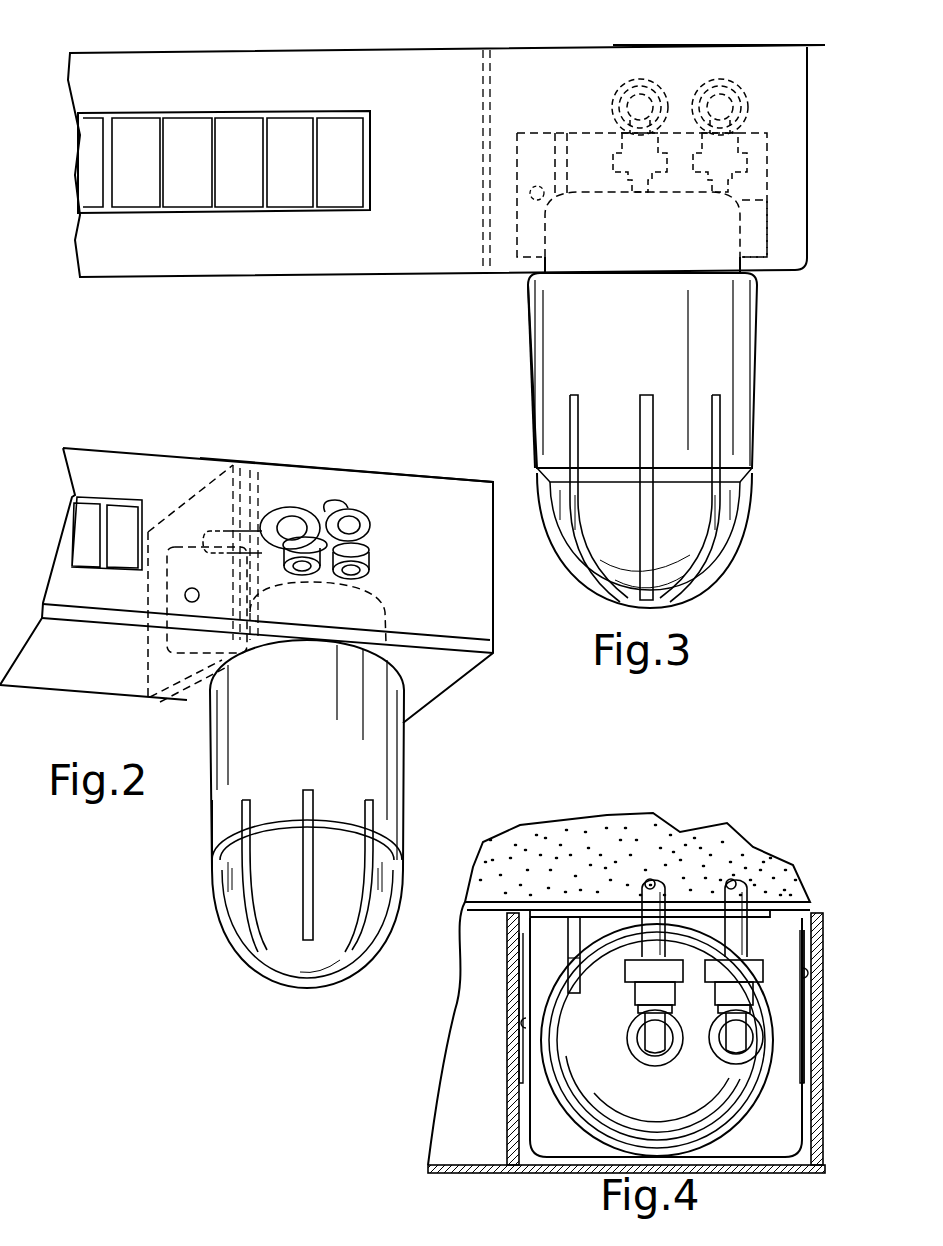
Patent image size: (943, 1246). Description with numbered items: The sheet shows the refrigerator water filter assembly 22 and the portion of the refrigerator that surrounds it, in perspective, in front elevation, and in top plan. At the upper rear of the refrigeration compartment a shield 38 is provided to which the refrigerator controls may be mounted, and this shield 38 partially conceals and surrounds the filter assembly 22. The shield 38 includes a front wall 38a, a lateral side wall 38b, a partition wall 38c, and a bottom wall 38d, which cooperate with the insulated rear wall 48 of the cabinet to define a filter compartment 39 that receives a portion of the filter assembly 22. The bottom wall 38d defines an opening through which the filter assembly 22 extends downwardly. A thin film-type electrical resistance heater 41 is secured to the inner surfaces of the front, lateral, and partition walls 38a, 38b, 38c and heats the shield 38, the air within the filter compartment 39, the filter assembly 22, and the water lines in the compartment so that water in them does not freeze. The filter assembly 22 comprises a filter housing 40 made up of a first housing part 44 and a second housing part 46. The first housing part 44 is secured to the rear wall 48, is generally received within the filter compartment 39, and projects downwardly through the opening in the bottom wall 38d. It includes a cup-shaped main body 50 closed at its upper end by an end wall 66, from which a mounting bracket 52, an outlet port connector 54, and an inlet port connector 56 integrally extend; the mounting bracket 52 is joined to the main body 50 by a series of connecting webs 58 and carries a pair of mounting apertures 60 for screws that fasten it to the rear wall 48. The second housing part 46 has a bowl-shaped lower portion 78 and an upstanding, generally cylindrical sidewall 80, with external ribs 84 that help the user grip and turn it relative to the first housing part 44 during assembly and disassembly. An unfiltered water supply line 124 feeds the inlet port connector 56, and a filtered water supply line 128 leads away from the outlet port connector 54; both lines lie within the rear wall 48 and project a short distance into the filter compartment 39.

In FIG. 3, the filter assembly 22 is at (750, 582).
In FIG. 2, the filter assembly 22 is at (216, 967).
In FIG. 4, the filter assembly 22 is at (552, 1133).
In FIG. 3, the shield 38 is at (392, 57).
In FIG. 2, the shield 38 is at (95, 463).
In FIG. 4, the shield 38 is at (619, 989).
In FIG. 3, the front wall 38a is at (613, 58).
In FIG. 2, the front wall 38a is at (460, 482).
In FIG. 4, the front wall 38a is at (563, 1173).
In FIG. 3, the lateral side wall 38b is at (833, 118).
In FIG. 4, the lateral side wall 38b is at (823, 992).
In FIG. 3, the partition wall 38c is at (485, 118).
In FIG. 2, the partition wall 38c is at (238, 489).
In FIG. 4, the partition wall 38c is at (509, 1118).
In FIG. 2, the bottom wall 38d is at (182, 693).
In FIG. 4, the bottom wall 38d is at (532, 1092).
In FIG. 4, the filter compartment 39 is at (796, 1059).
In FIG. 3, the filter housing 40 is at (768, 310).
In FIG. 2, the filter housing 40 is at (415, 741).
In FIG. 4, the thin film-type electrical resistance heater 41 is at (528, 1023).
In FIG. 3, the first housing part 44 is at (557, 254).
In FIG. 2, the first housing part 44 is at (350, 606).
In FIG. 3, the second housing part 46 is at (535, 360).
In FIG. 2, the second housing part 46 is at (215, 808).
In FIG. 4, the rear wall 48 is at (492, 913).
In FIG. 3, the main body 50 is at (730, 235).
In FIG. 3, the mounting bracket 52 is at (758, 140).
In FIG. 2, the mounting bracket 52 is at (223, 659).
In FIG. 4, the mounting bracket 52 is at (767, 918).
In FIG. 3, the outlet port connector 54 is at (637, 184).
In FIG. 2, the outlet port connector 54 is at (303, 573).
In FIG. 3, the inlet port connector 56 is at (728, 188).
In FIG. 2, the inlet port connector 56 is at (360, 575).
In FIG. 4, the connecting webs 58 is at (568, 946).
In FIG. 2, the mounting apertures 60 is at (192, 591).
In FIG. 4, the end wall 66 is at (697, 1086).
In FIG. 3, the bowl-shaped lower portion 78 is at (610, 602).
In FIG. 2, the bowl-shaped lower portion 78 is at (302, 975).
In FIG. 3, the cylindrical sidewall 80 is at (700, 358).
In FIG. 2, the cylindrical sidewall 80 is at (375, 780).
In FIG. 4, the cylindrical sidewall 80 is at (757, 1086).
In FIG. 3, the external ribs 84 is at (755, 507).
In FIG. 2, the external ribs 84 is at (358, 905).
In FIG. 2, the unfiltered water supply line 124 is at (313, 512).
In FIG. 4, the unfiltered water supply line 124 is at (755, 882).
In FIG. 2, the filtered water supply line 128 is at (230, 527).
In FIG. 4, the filtered water supply line 128 is at (637, 898).